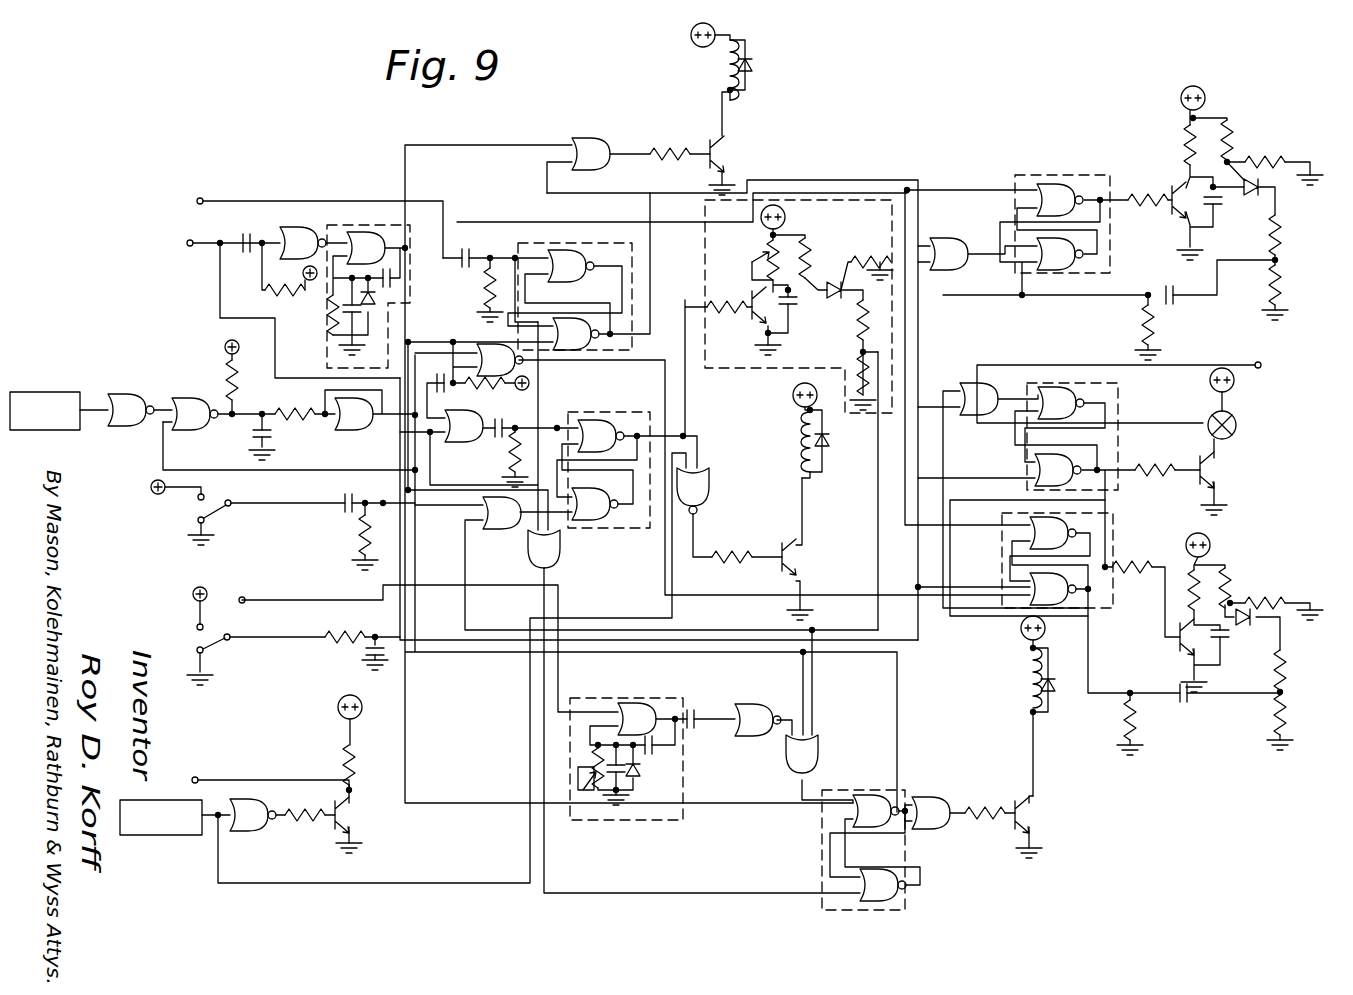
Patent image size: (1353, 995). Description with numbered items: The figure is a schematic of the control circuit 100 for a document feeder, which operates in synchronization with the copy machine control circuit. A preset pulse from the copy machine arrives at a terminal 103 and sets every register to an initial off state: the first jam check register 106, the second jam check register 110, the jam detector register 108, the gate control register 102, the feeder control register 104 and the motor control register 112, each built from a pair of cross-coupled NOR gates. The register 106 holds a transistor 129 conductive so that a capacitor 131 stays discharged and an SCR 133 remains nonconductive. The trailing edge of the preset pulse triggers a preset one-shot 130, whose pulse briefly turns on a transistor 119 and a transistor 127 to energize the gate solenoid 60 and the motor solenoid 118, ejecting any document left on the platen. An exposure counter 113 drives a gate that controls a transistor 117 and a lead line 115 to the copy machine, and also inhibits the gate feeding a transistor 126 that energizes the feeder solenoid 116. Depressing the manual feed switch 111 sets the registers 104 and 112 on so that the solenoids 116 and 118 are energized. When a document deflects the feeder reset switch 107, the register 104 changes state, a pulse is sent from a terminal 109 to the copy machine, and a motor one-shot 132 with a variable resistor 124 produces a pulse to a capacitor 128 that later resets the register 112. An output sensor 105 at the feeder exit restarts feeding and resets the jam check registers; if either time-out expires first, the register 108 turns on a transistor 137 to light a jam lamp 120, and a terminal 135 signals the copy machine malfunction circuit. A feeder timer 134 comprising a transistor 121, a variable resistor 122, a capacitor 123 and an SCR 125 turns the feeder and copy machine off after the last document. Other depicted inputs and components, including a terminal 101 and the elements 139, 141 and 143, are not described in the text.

The gate solenoid 60 is at (763, 64).
The control circuit 100 is at (666, 466).
The copy exposures completed input 101 is at (264, 205).
The gate control register 102 is at (520, 288).
The terminal 103 is at (252, 306).
The feeder control register 104 is at (603, 457).
The output sensor 105 is at (45, 427).
The first jam check register 106 is at (1017, 212).
The feeder reset switch 107 is at (272, 525).
The jam detector register 108 is at (1026, 455).
The terminal 109 is at (271, 581).
The second jam check register 110 is at (1084, 603).
The manual feed switch 111 is at (275, 636).
The motor control register 112 is at (895, 850).
The exposure counter 113 is at (161, 838).
The lead line 115 is at (277, 744).
The feeder solenoid 116 is at (835, 435).
The transistor 117 is at (374, 821).
The motor solenoid 118 is at (1065, 706).
The transistor 119 is at (748, 143).
The jam lamp 120 is at (1254, 420).
The transistor 121 is at (746, 321).
The variable resistor 122 is at (744, 259).
The capacitor 123 is at (809, 326).
The variable resistor 124 is at (588, 814).
The SCR 125 is at (834, 306).
The transistor 126 is at (818, 549).
The transistor 127 is at (1055, 827).
The capacitor 128 is at (710, 697).
The transistor 129 is at (1188, 173).
The preset one-shot 130 is at (336, 284).
The capacitor 131 is at (1235, 218).
The motor one-shot 132 is at (464, 723).
The SCR 133 is at (1274, 218).
The feeder timer 134 is at (789, 290).
The terminal 135 is at (1145, 374).
The transistor 137 is at (1244, 477).
The transistor 139 is at (1175, 612).
The capacitor 141 is at (1238, 652).
The resistor 143 is at (1220, 658).